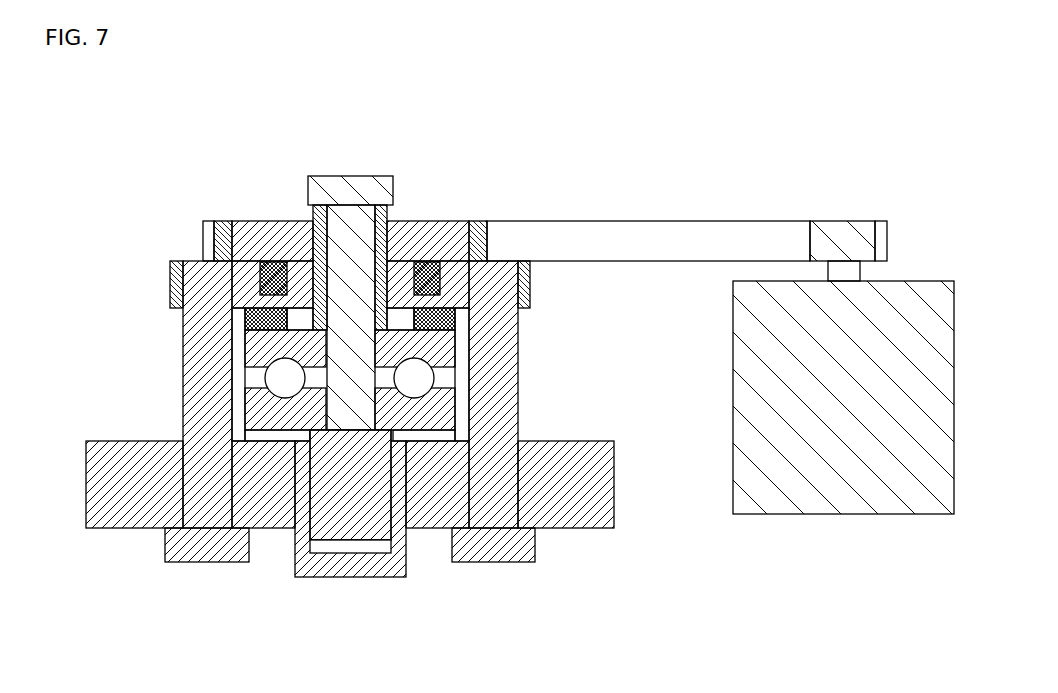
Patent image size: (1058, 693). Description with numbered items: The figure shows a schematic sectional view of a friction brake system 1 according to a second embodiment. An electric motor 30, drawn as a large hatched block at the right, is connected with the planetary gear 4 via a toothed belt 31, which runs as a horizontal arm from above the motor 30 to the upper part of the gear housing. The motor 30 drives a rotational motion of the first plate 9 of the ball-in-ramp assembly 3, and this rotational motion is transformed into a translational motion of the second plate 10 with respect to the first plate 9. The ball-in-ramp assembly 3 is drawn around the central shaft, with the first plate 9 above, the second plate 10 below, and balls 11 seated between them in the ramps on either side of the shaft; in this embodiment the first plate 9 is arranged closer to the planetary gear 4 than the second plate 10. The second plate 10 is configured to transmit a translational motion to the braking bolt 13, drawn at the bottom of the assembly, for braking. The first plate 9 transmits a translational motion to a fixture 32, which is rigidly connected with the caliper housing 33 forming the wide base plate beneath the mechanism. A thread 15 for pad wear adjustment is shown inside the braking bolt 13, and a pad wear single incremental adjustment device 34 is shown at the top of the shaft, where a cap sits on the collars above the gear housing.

The friction brake system 1 is at (520, 382).
The ball-in-ramp assembly 3 is at (380, 369).
The planetary gear 4 is at (427, 198).
The first plate 9 is at (447, 352).
The second plate 10 is at (430, 417).
The ball 11 is at (423, 375).
The braking bolt 13 is at (400, 568).
The thread 15 is at (318, 503).
The electric motor 30 is at (848, 500).
The toothed belt 31 is at (655, 237).
The fixture 32 is at (495, 280).
The caliper housing 33 is at (615, 481).
The pad wear single incremental adjustment device 34 is at (303, 204).